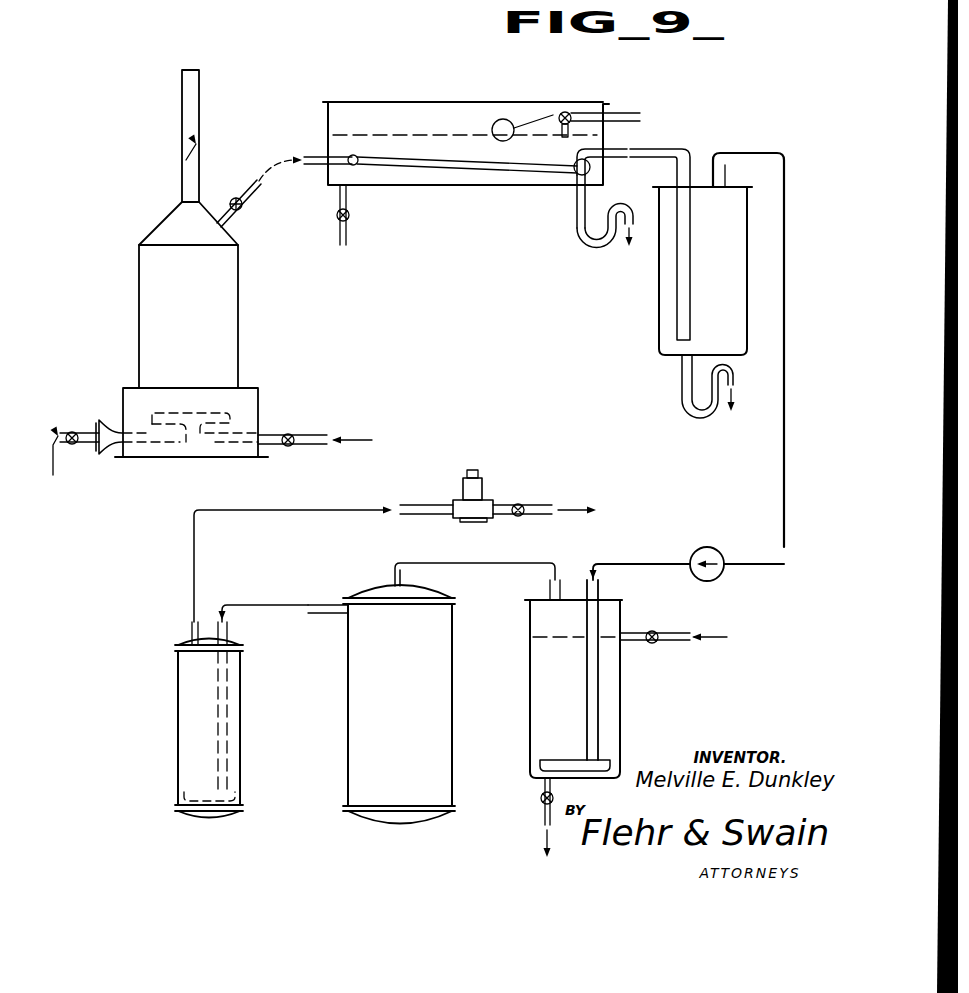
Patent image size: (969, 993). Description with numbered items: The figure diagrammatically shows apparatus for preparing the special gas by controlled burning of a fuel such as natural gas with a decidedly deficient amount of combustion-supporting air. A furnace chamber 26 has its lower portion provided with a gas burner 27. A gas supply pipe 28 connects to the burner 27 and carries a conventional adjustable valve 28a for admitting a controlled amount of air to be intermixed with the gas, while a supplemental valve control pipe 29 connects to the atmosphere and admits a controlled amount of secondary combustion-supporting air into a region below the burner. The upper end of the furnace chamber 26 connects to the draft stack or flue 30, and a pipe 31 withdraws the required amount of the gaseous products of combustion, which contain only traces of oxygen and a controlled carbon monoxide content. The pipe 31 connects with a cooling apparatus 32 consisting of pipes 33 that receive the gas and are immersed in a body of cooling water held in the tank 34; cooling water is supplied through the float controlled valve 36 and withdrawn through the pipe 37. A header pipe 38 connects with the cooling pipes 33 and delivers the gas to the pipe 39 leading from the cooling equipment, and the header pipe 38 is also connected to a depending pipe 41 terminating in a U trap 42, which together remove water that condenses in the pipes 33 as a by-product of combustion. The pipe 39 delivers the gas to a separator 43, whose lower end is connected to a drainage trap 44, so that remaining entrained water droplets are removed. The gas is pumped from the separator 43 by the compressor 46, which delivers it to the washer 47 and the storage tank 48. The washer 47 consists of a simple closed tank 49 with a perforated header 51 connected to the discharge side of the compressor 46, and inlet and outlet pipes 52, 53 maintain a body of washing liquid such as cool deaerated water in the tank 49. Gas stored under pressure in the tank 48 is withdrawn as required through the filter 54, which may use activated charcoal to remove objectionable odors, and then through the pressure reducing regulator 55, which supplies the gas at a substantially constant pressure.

The furnace chamber 26 is at (240, 298).
The gas burner 27 is at (245, 412).
The gas supply pipe 28 is at (82, 431).
The adjustable valve 28a is at (98, 452).
The supplemental valve control pipe 29 is at (315, 432).
The draft stack 30 is at (182, 131).
The pipe 31 is at (252, 190).
The cooling apparatus 32 is at (398, 101).
The cooling pipes 33 is at (388, 164).
The tank 34 is at (441, 178).
The float controlled valve 36 is at (567, 111).
The pipe 37 is at (337, 215).
The header pipe 38 is at (576, 175).
The pipe 39 is at (622, 157).
The depending pipe 41 is at (577, 224).
The U trap 42 is at (597, 248).
The separator 43 is at (659, 320).
The drainage trap 44 is at (710, 416).
The compressor 46 is at (702, 548).
The washer 47 is at (623, 708).
The storage tank 48 is at (348, 718).
The closed tank 49 is at (530, 718).
The perforated header 51 is at (605, 765).
The inlet pipe 52 is at (656, 643).
The outlet pipe 53 is at (545, 812).
The filter 54 is at (178, 717).
The pressure reducing regulator 55 is at (488, 496).